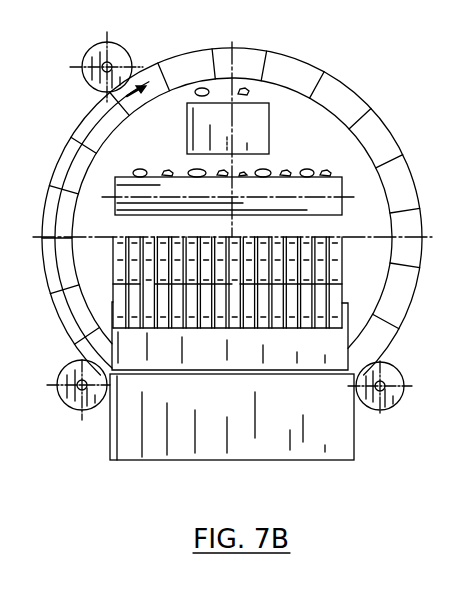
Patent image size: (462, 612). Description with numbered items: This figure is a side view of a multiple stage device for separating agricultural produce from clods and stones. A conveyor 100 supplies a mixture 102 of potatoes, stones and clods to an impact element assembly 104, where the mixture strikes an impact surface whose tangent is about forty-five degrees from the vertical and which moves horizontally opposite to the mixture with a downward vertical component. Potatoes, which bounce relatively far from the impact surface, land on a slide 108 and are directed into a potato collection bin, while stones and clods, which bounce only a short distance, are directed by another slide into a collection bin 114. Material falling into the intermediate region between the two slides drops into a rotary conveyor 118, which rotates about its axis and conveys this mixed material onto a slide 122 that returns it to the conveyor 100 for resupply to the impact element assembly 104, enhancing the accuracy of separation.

The conveyor 100 is at (328, 190).
The mixture 102 is at (143, 168).
The impact element assembly 104 is at (120, 255).
The slide 108 is at (337, 333).
The collection bin 114 is at (128, 443).
The rotary conveyor 118 is at (252, 65).
The slide 122 is at (255, 137).